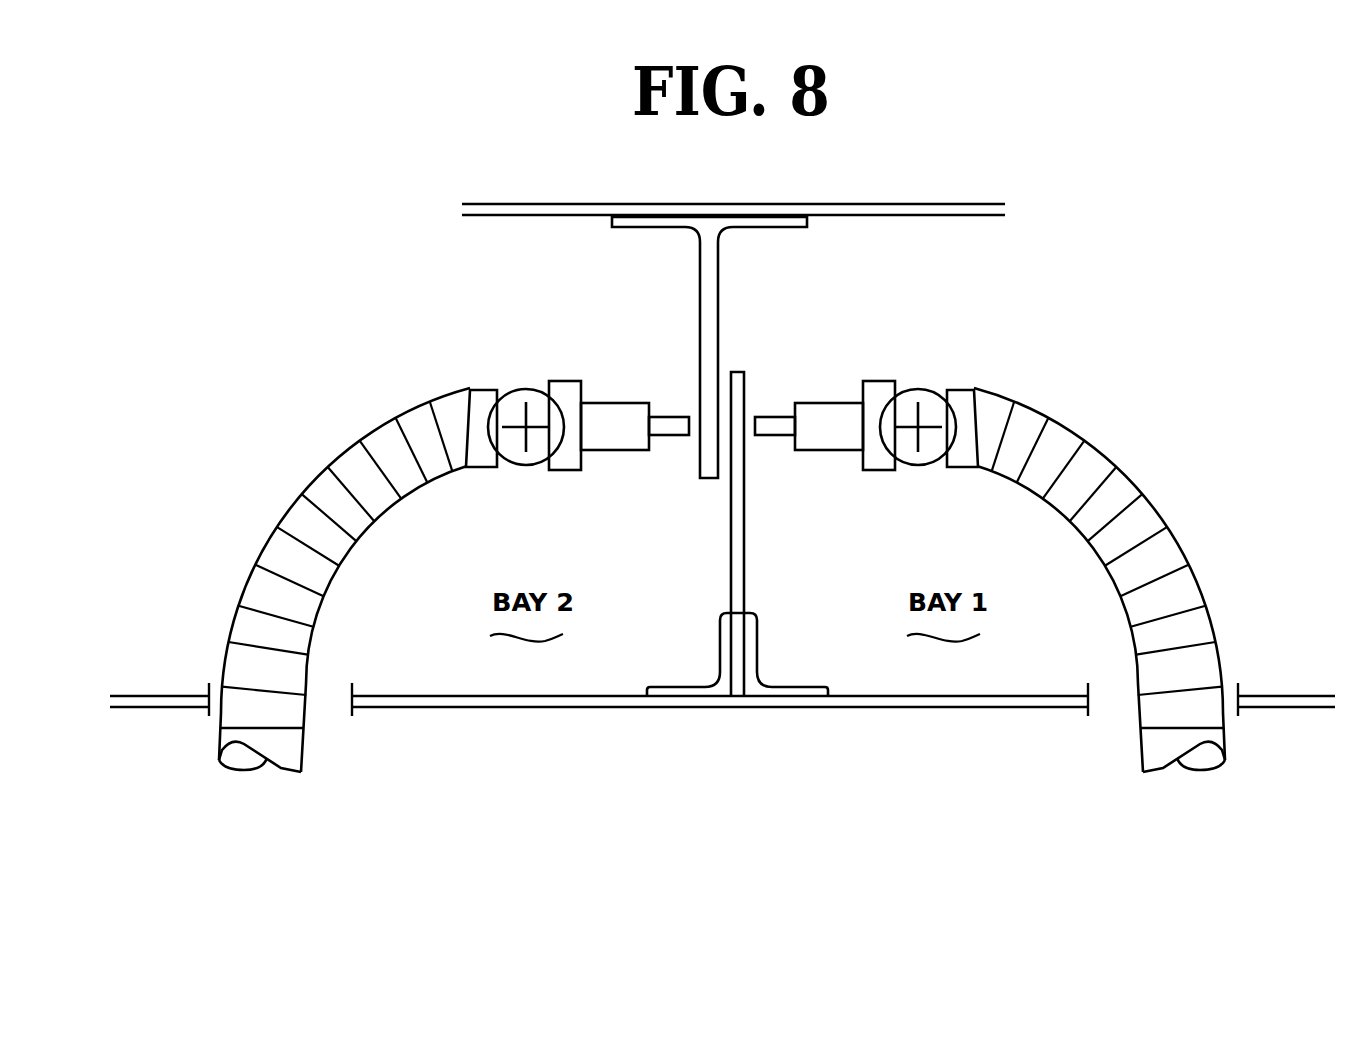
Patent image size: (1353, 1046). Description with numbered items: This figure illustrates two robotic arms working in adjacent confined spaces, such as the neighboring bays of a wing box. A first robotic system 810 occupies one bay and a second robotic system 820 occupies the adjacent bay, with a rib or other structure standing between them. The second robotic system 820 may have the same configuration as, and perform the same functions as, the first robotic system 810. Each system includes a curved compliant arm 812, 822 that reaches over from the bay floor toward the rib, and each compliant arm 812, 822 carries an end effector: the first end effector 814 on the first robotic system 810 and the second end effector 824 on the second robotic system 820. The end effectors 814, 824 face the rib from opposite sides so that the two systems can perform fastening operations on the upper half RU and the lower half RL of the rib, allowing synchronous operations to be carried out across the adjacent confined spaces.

The first robotic system 810 is at (990, 538).
The compliant arm 812 is at (1103, 442).
The first end effector 814 is at (822, 408).
The second robotic system 820 is at (454, 534).
The compliant arm 822 is at (348, 437).
The second end effector 824 is at (628, 400).
The upper half of rib RU is at (717, 302).
The lower half of rib RL is at (747, 557).